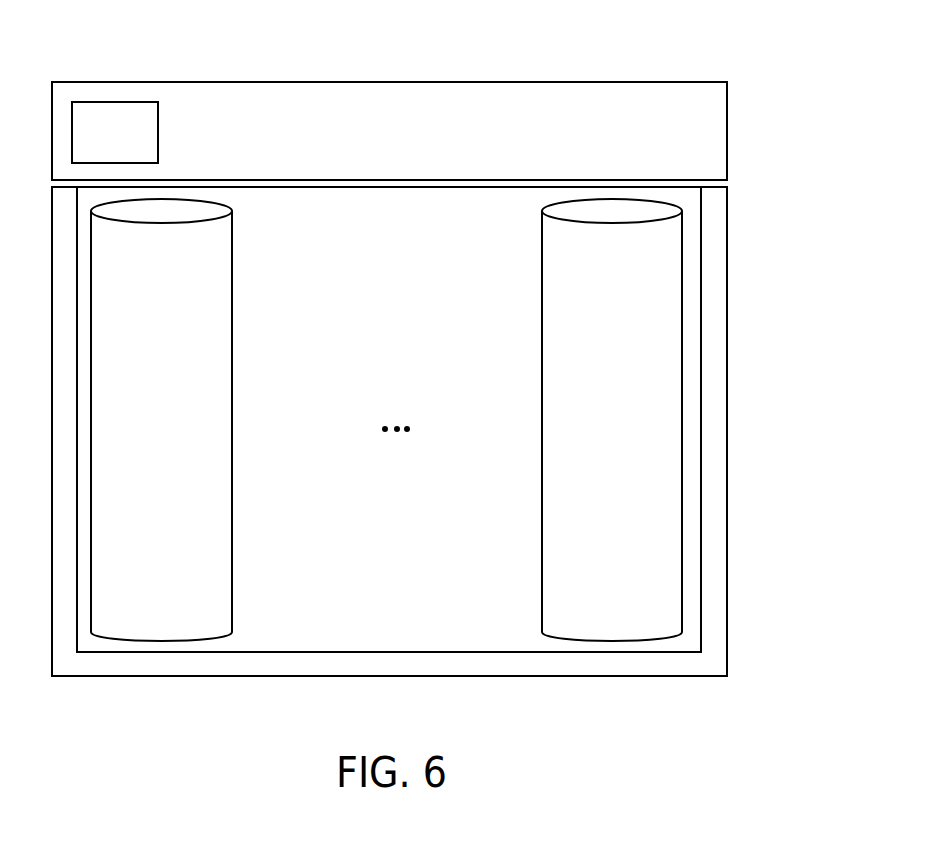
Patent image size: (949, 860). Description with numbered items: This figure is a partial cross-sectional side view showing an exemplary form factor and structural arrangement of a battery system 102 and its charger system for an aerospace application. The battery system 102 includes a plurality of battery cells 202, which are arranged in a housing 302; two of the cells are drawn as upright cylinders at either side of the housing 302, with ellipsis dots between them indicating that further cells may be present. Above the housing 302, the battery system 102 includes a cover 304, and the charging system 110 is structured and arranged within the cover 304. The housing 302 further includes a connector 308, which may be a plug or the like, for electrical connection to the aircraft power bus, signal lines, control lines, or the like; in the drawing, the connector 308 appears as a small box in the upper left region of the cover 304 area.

The battery system 102 is at (853, 188).
The cover 304 is at (557, 142).
The connector 308 is at (115, 132).
The charging system 110 is at (389, 161).
The housing 302 is at (717, 513).
The battery cells 202 is at (386, 420).